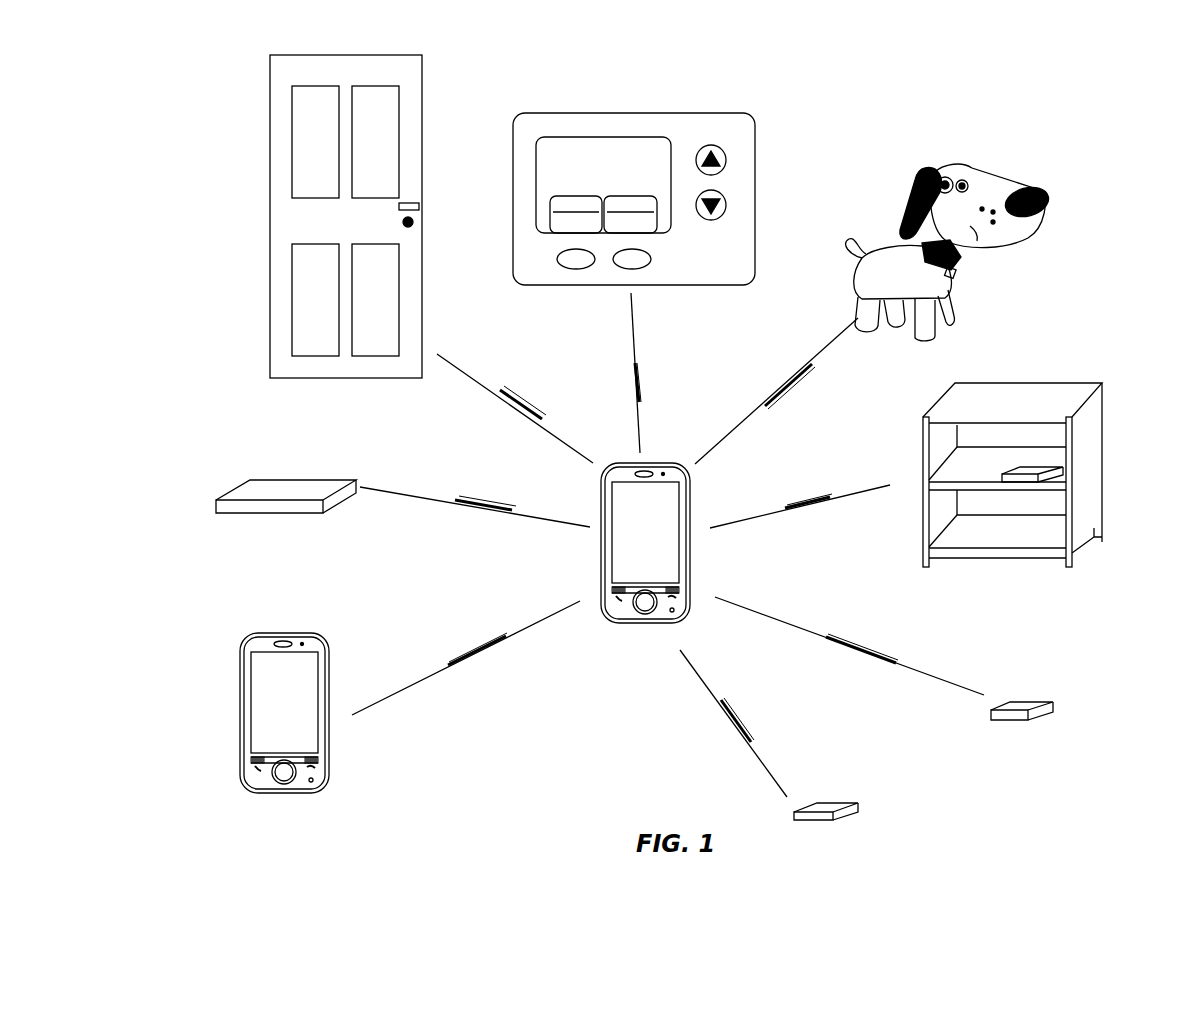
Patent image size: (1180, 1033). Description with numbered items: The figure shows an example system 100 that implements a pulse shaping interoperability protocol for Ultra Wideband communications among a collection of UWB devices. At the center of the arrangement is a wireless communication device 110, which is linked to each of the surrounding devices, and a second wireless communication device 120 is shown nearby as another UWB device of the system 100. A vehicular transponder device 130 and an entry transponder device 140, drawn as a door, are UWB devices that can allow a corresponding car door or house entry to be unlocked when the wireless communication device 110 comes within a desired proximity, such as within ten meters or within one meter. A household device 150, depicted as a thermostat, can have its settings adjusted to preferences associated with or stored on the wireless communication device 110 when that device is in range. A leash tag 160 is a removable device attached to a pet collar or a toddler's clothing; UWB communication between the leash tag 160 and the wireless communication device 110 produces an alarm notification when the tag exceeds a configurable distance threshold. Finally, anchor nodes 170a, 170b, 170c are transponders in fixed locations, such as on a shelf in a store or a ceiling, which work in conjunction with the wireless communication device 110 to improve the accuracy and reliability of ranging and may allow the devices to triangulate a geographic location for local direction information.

The system 100 is at (1087, 83).
The wireless communication device 110 is at (648, 623).
The wireless communication device 120 is at (240, 688).
The vehicular transponder device 130 is at (305, 480).
The entry transponder device 140 is at (417, 203).
The household device 150 is at (711, 113).
The leash tag 160 is at (960, 269).
The anchor node 170a is at (1062, 460).
The anchor node 170b is at (1043, 702).
The anchor node 170c is at (850, 803).